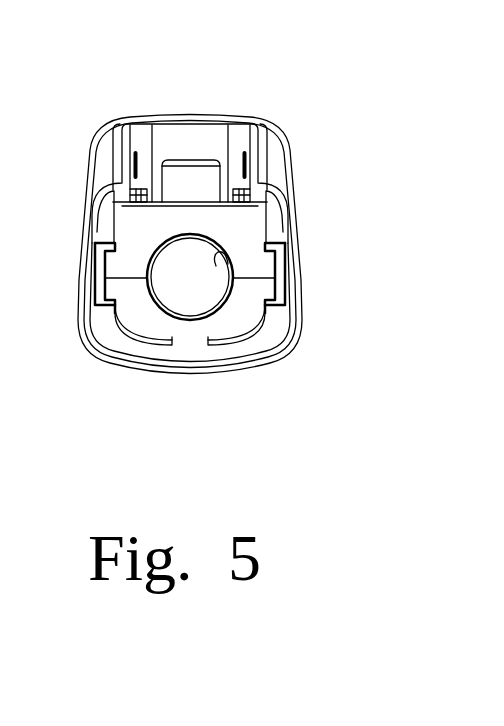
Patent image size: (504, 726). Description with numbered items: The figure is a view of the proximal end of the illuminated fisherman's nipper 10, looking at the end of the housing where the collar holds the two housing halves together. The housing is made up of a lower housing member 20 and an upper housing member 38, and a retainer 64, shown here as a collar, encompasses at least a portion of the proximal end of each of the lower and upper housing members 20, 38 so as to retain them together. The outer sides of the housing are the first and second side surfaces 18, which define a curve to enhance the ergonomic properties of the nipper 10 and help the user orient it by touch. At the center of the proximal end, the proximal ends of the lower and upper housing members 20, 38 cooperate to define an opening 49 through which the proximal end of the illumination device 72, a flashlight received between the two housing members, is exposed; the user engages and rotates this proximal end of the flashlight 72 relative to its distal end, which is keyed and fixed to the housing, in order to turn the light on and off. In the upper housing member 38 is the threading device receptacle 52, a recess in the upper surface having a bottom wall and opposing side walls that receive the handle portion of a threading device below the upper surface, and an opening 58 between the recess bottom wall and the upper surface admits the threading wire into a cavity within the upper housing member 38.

The nipper 10 is at (320, 93).
The side surfaces 18 is at (78, 247).
The lower housing member 20 is at (153, 323).
The upper housing member 38 is at (157, 117).
The opening 49 is at (228, 262).
The threading device receptacle 52 is at (183, 142).
The opening 58 is at (202, 177).
The retainer 64 is at (262, 368).
The illumination device 72 is at (193, 290).